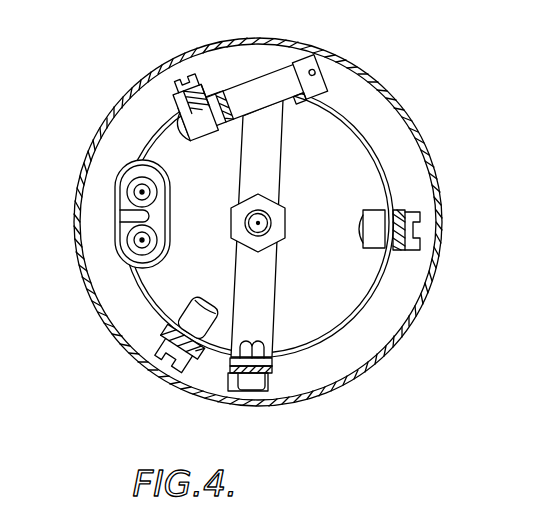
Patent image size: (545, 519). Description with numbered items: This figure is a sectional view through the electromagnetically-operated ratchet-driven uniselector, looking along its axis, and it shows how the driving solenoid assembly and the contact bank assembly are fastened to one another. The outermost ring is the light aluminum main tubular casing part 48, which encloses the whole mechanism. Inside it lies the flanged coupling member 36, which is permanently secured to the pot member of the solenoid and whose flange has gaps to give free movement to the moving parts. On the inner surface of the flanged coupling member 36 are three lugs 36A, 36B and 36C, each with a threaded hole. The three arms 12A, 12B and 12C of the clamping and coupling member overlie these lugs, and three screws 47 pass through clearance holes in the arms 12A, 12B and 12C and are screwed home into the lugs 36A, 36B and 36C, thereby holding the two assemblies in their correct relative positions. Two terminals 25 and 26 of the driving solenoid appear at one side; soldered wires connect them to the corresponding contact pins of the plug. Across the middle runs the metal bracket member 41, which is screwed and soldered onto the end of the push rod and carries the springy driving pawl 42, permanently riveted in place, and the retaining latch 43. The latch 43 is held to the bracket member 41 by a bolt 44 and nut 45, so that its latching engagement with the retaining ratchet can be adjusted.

The arm 12A is at (380, 216).
The arm 12B is at (173, 100).
The arm 12C is at (166, 332).
The terminal 25 is at (134, 192).
The terminal 26 is at (134, 242).
The flanged coupling member 36 is at (370, 295).
The lug 36A is at (370, 223).
The lug 36B is at (207, 118).
The lug 36C is at (188, 317).
The bracket member 41 is at (270, 158).
The driving pawl 42 is at (263, 97).
The retaining latch 43 is at (272, 369).
The bolt 44 is at (227, 385).
The nut 45 is at (272, 350).
The screw 47 is at (193, 72).
The main tubular casing part 48 is at (331, 70).